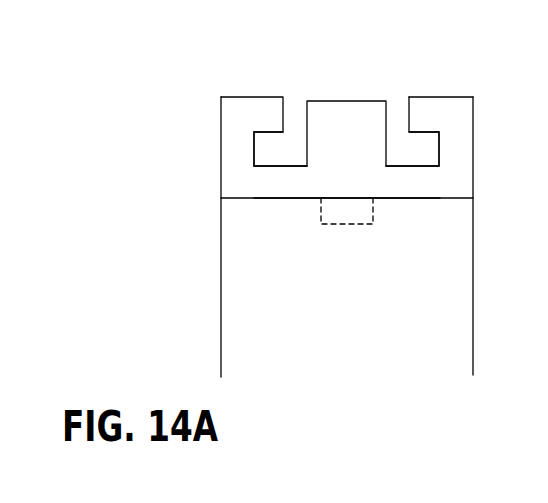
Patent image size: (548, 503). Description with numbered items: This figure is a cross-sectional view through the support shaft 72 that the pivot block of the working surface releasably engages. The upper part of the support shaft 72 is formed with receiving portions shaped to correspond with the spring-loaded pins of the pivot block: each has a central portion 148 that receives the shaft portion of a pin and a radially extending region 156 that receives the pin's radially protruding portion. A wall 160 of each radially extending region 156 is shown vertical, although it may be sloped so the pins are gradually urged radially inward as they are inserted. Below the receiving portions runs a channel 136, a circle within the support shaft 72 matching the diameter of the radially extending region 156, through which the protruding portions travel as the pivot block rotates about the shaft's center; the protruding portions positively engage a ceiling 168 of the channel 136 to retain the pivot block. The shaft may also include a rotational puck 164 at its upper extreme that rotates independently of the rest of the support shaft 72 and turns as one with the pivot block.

The support shaft 72 is at (218, 286).
The channel 136 is at (263, 157).
The central portion 148 is at (297, 109).
The radially extending region 156 is at (263, 142).
The wall 160 is at (283, 113).
The rotational puck 164 is at (438, 205).
The ceiling 168 is at (280, 134).